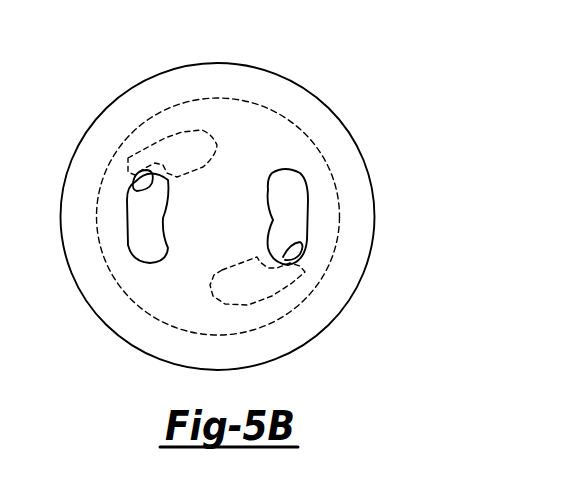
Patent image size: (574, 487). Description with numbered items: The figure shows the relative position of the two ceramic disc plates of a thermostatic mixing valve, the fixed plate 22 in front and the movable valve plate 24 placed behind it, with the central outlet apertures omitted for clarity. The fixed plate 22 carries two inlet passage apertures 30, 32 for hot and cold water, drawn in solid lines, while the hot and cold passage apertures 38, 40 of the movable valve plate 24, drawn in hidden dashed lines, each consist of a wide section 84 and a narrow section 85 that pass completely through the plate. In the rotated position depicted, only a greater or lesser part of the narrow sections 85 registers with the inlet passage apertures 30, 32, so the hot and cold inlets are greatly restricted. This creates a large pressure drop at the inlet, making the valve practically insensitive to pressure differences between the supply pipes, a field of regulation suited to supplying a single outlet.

The fixed plate 22 is at (315, 105).
The movable valve plate 24 is at (132, 482).
The inlet passage aperture 30 is at (305, 204).
The inlet passage aperture 32 is at (133, 223).
The passage aperture 38 is at (262, 282).
The passage aperture 40 is at (202, 148).
The wide section 84 is at (208, 136).
The narrow section 85 is at (135, 180).